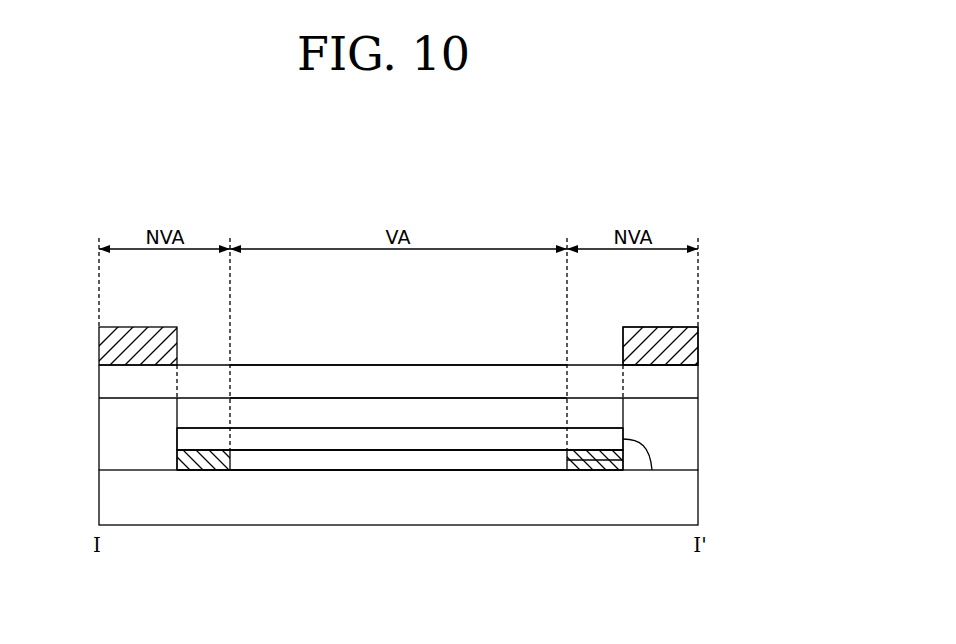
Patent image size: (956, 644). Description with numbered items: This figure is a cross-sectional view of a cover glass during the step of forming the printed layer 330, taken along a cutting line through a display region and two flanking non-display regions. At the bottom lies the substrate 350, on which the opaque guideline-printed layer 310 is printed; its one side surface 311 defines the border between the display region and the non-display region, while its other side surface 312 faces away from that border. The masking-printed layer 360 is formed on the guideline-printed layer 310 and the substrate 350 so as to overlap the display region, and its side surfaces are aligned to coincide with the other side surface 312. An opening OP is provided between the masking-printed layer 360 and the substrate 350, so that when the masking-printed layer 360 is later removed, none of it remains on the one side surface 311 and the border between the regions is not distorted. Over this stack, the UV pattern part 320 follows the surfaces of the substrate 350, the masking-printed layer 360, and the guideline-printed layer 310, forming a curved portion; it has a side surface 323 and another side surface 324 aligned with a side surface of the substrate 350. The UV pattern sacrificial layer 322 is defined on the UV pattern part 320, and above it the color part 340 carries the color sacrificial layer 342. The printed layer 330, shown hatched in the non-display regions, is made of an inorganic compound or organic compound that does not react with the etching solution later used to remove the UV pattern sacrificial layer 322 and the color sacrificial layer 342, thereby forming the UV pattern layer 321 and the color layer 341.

The guideline-printed layer 310 is at (573, 470).
The one side surface 311 is at (565, 452).
The another side surface 312 is at (595, 470).
The UV pattern part 320 is at (700, 412).
The UV pattern layer 321 is at (687, 462).
The UV pattern sacrificial layer 322 is at (437, 415).
The side surface 323 is at (652, 470).
The another side surface 324 is at (698, 433).
The printed layer 330 is at (685, 346).
The color part 340 is at (700, 383).
The color layer 341 is at (657, 377).
The color sacrificial layer 342 is at (511, 378).
The substrate 350 is at (687, 498).
The masking-printed layer 360 is at (474, 440).
The opening OP is at (402, 460).